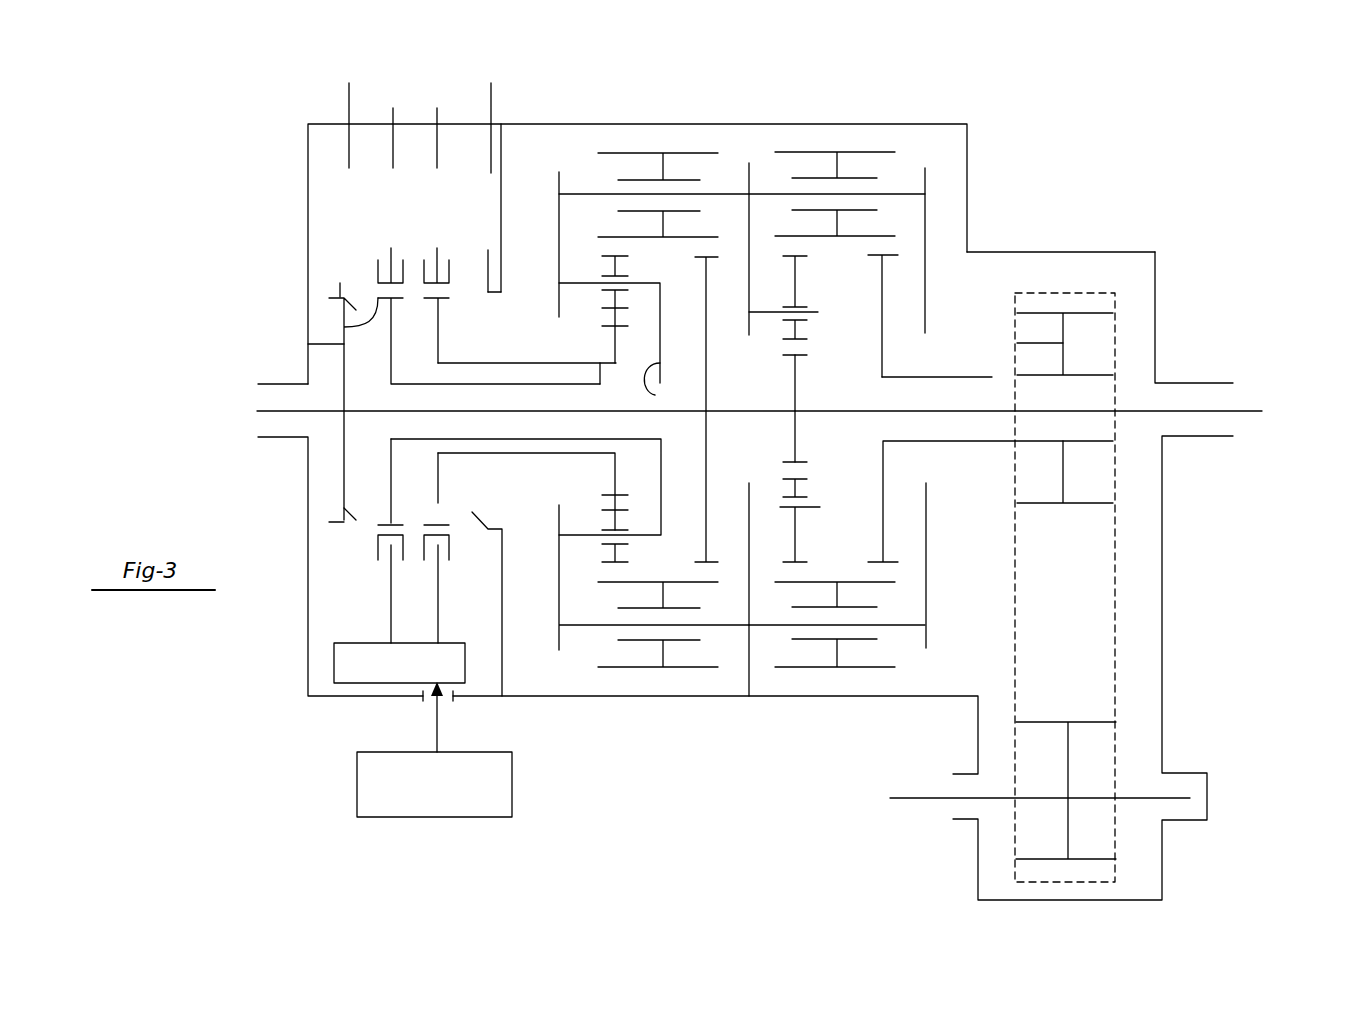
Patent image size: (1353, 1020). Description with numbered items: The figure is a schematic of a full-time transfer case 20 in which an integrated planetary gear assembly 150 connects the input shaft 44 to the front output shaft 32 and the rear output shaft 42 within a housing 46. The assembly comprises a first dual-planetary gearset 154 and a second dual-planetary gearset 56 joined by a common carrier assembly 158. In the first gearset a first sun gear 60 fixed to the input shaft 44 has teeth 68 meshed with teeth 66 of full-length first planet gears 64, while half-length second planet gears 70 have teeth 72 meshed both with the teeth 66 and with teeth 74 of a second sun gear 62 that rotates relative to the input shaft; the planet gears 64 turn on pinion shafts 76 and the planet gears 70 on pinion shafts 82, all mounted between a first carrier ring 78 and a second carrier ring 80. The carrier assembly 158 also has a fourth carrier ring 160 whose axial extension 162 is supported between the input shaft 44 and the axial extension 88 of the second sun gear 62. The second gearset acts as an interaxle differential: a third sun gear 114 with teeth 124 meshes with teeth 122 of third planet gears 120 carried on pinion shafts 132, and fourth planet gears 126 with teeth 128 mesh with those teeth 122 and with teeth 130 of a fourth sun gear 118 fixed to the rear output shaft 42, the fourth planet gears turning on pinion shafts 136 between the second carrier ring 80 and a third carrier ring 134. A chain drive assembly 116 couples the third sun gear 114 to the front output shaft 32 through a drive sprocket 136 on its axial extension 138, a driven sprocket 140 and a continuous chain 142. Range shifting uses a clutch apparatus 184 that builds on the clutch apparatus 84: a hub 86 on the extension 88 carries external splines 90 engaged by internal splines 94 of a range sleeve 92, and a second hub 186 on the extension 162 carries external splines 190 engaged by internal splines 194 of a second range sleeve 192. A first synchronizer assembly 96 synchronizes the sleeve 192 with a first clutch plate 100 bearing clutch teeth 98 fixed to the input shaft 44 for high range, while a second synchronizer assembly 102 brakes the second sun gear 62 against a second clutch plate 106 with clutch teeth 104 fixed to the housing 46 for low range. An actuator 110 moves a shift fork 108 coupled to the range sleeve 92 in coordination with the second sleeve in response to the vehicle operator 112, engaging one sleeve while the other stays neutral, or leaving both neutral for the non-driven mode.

The transfer case 20 is at (1092, 158).
The front output shaft 32 is at (918, 800).
The rear output shaft 42 is at (1250, 411).
The input shaft 44 is at (290, 411).
The housing 46 is at (1104, 246).
The second dual-planetary gearset 56 is at (930, 140).
The first sun gear 60 is at (705, 350).
The second sun gear 62 is at (612, 354).
The first planet gears 64 is at (663, 165).
The teeth of first planet gears 66 is at (625, 256).
The teeth of first sun gear 68 is at (720, 250).
The second planet gears 70 is at (616, 266).
The teeth of second planet gears 72 is at (618, 308).
The teeth of second sun gear 74 is at (617, 325).
The pinion shaft 76 is at (602, 177).
The first carrier ring 78 is at (553, 265).
The second carrier ring 80 is at (748, 650).
The pinion shaft 82 is at (583, 282).
The clutch apparatus 84 is at (449, 306).
The hub 86 is at (440, 503).
The axial extension of second sun gear 88 is at (600, 386).
The external splines 90 is at (433, 525).
The range sleeve 92 is at (452, 270).
The internal longitudinal splines 94 is at (452, 532).
The first synchronizer assembly 96 is at (344, 518).
The clutch teeth 98 is at (340, 285).
The first clutch plate 100 is at (308, 344).
The second synchronizer assembly 102 is at (475, 300).
The clutch teeth 104 is at (488, 250).
The second clutch plate 106 is at (501, 188).
The shift fork 108 is at (438, 600).
The actuator 110 is at (334, 670).
The operator 112 is at (512, 772).
The third sun gear 114 is at (883, 482).
The chain drive assembly 116 is at (1122, 328).
The fourth sun gear 118 is at (795, 383).
The third planet gears 120 is at (840, 167).
The teeth of third planet gears 122 is at (823, 237).
The teeth of third sun gear 124 is at (888, 255).
The fourth planet gears 126 is at (798, 500).
The teeth of fourth planet gears 128 is at (795, 479).
The teeth of fourth sun gear 130 is at (800, 348).
The pinion shaft 132 is at (795, 626).
The third carrier ring 134 is at (927, 558).
The pinion shaft 136 is at (765, 312).
The axial extension of third sun gear 138 is at (992, 375).
The driven sprocket 140 is at (1063, 762).
The continuous chain 142 is at (1115, 565).
The integrated planetary gear assembly 150 is at (760, 150).
The first dual-planetary gearset 154 is at (541, 153).
The common carrier assembly 158 is at (938, 211).
The fourth carrier ring 160 is at (670, 385).
The axial extension of fourth carrier ring 162 is at (520, 385).
The clutch apparatus 184 is at (345, 551).
The second hub 186 is at (391, 452).
The external splines 190 is at (340, 312).
The second range sleeve 192 is at (378, 264).
The internal longitudinal splines 194 is at (378, 535).